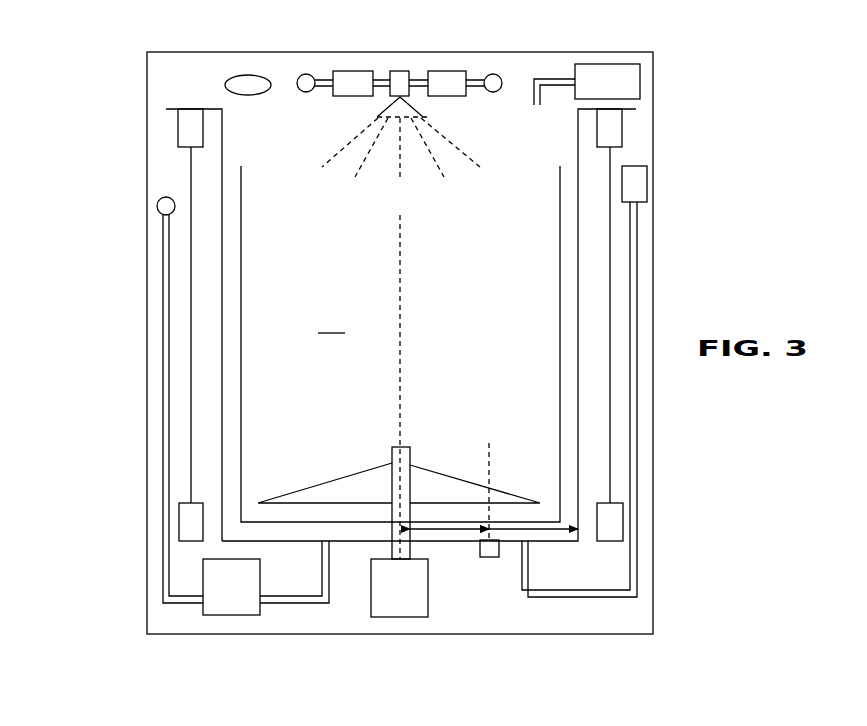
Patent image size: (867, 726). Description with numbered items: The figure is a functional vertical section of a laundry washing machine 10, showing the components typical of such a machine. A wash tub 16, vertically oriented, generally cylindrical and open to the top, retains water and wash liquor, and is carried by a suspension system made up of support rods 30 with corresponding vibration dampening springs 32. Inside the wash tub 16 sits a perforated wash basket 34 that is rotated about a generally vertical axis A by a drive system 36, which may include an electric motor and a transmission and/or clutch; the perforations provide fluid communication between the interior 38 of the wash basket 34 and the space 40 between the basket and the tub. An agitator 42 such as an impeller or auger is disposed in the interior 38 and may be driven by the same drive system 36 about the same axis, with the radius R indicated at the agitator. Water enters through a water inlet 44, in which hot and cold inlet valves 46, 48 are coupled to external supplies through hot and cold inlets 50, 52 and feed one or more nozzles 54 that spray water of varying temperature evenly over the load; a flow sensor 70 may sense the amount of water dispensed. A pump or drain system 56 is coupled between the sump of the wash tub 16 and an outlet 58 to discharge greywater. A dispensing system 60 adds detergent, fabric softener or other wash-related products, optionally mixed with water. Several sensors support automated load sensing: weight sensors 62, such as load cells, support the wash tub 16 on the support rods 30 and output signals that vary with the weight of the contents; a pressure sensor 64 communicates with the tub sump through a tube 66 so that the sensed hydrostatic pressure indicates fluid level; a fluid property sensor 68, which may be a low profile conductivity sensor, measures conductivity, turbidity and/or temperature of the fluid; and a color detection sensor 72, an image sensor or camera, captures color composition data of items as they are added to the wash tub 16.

The laundry washing machine 10 is at (73, 116).
The wash tub 16 is at (222, 153).
The support rods 30 is at (191, 379).
The vibration dampening springs 32 is at (179, 518).
The wash basket 34 is at (560, 205).
The drive system 36 is at (428, 603).
The interior 38 is at (331, 323).
The space 40 is at (568, 308).
The agitator 42 is at (360, 472).
The water inlet 44 is at (243, 60).
The hot inlet valve 46 is at (360, 71).
The cold inlet valve 48 is at (455, 71).
The hot inlet 50 is at (301, 73).
The cold inlet 52 is at (502, 75).
The nozzles 54 is at (372, 120).
The pump or drain system 56 is at (233, 617).
The outlet 58 is at (157, 207).
The dispensing system 60 is at (617, 64).
The weight sensors 62 is at (178, 132).
The pressure sensor 64 is at (647, 180).
The tube 66 is at (637, 290).
The fluid property sensor 68 is at (489, 557).
The flow sensor 70 is at (408, 71).
The color detection sensor 72 is at (226, 86).
The vertical axis A is at (400, 287).
The radius R is at (489, 465).